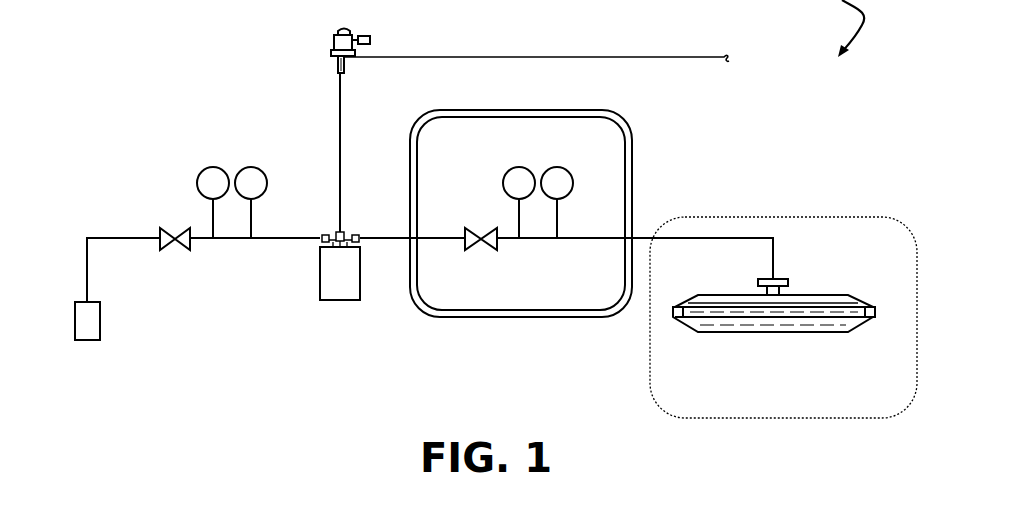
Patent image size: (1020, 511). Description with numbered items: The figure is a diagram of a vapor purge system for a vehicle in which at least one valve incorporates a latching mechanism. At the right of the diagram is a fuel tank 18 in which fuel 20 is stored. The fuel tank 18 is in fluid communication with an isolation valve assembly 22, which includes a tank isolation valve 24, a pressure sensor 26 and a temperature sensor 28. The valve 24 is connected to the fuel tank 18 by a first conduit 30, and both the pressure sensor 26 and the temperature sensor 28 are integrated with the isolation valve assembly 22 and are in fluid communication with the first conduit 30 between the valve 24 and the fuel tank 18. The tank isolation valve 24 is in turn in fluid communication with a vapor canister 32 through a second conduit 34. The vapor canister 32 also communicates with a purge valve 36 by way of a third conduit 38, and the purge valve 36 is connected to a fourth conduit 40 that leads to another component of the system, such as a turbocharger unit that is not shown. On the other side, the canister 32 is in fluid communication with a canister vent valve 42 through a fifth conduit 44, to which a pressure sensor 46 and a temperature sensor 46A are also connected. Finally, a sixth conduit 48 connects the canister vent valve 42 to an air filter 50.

The fuel tank 18 is at (850, 296).
The fuel 20 is at (806, 304).
The isolation valve assembly 22 is at (624, 107).
The tank isolation valve 24 is at (490, 228).
The pressure sensor 26 is at (517, 167).
The temperature sensor 28 is at (557, 167).
The first conduit 30 is at (641, 238).
The vapor canister 32 is at (348, 278).
The second conduit 34 is at (388, 238).
The purge valve 36 is at (336, 35).
The third conduit 38 is at (343, 142).
The fourth conduit 40 is at (507, 57).
The canister vent valve 42 is at (177, 228).
The fifth conduit 44 is at (296, 238).
The pressure sensor 46 is at (213, 167).
The temperature sensor 46A is at (251, 167).
The sixth conduit 48 is at (88, 268).
The air filter 50 is at (100, 322).